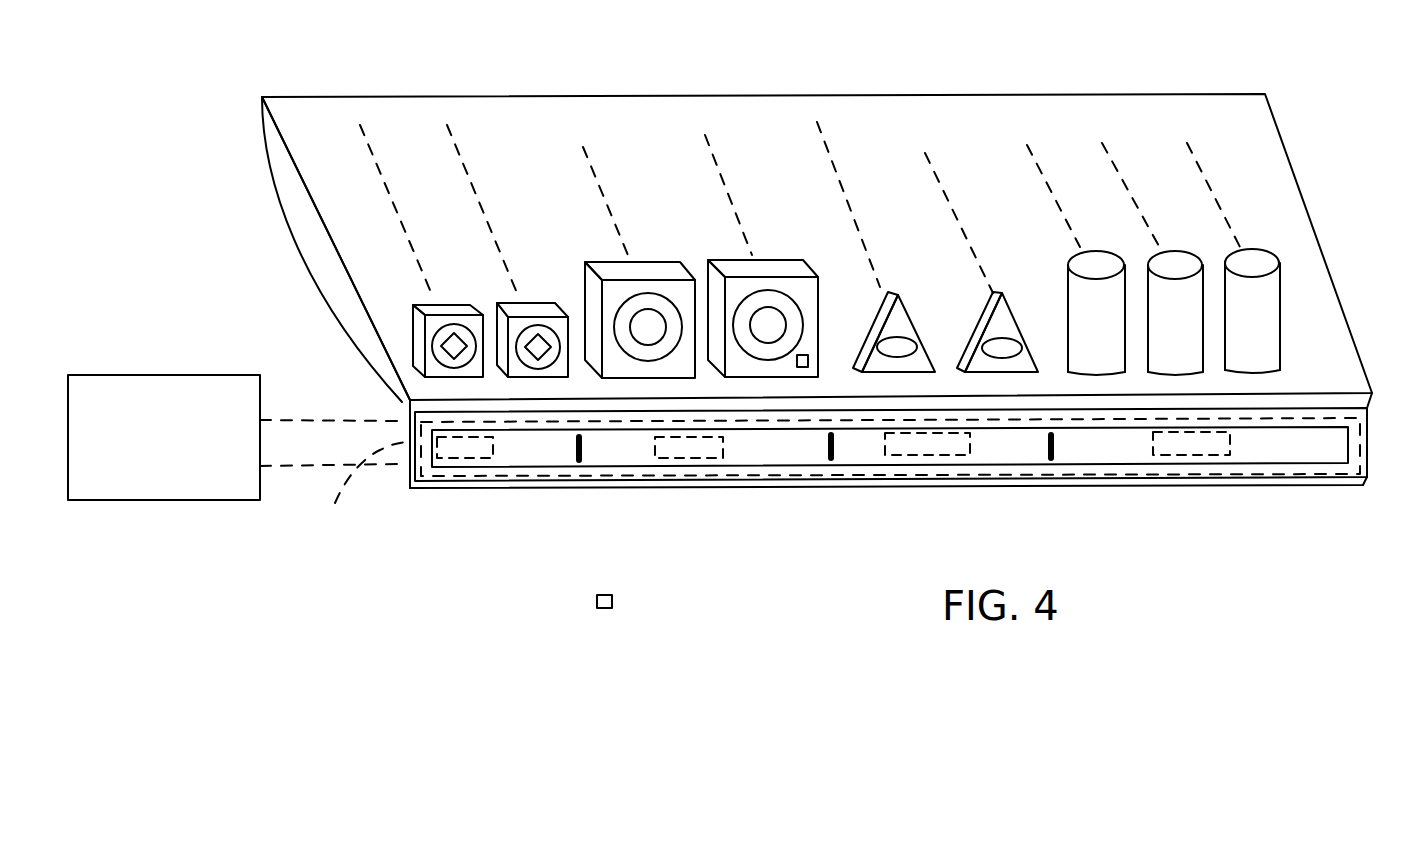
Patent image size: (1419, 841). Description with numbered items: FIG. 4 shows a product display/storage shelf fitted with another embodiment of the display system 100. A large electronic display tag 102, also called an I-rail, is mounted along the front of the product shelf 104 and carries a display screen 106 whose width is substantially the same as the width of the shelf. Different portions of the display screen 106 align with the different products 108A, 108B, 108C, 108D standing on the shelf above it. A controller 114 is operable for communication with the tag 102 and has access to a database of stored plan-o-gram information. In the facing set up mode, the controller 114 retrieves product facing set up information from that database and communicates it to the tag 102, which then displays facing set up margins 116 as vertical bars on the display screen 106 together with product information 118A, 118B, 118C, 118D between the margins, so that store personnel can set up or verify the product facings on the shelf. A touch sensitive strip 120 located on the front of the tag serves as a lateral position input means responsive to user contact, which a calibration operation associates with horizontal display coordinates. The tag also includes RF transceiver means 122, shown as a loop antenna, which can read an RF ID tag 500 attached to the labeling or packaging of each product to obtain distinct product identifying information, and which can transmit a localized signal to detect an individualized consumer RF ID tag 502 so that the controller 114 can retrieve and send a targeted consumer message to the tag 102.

The display system 100 is at (340, 53).
The electronic display tag 102 is at (407, 480).
The product shelf 104 is at (293, 228).
The display screen 106 is at (1297, 458).
The product 108A is at (450, 305).
The product 108B is at (652, 268).
The product 108C is at (908, 310).
The product 108D is at (1095, 247).
The controller 114 is at (183, 373).
The facing set up margins 116 is at (582, 452).
The product information 118A is at (462, 457).
The product information 118B is at (745, 455).
The product information 118C is at (975, 445).
The product information 118D is at (1218, 442).
The touch sensitive strip 120 is at (443, 490).
The RF transceiver means 122 is at (335, 479).
The RF ID tag 500 is at (808, 357).
The consumer RF ID tag 502 is at (612, 600).